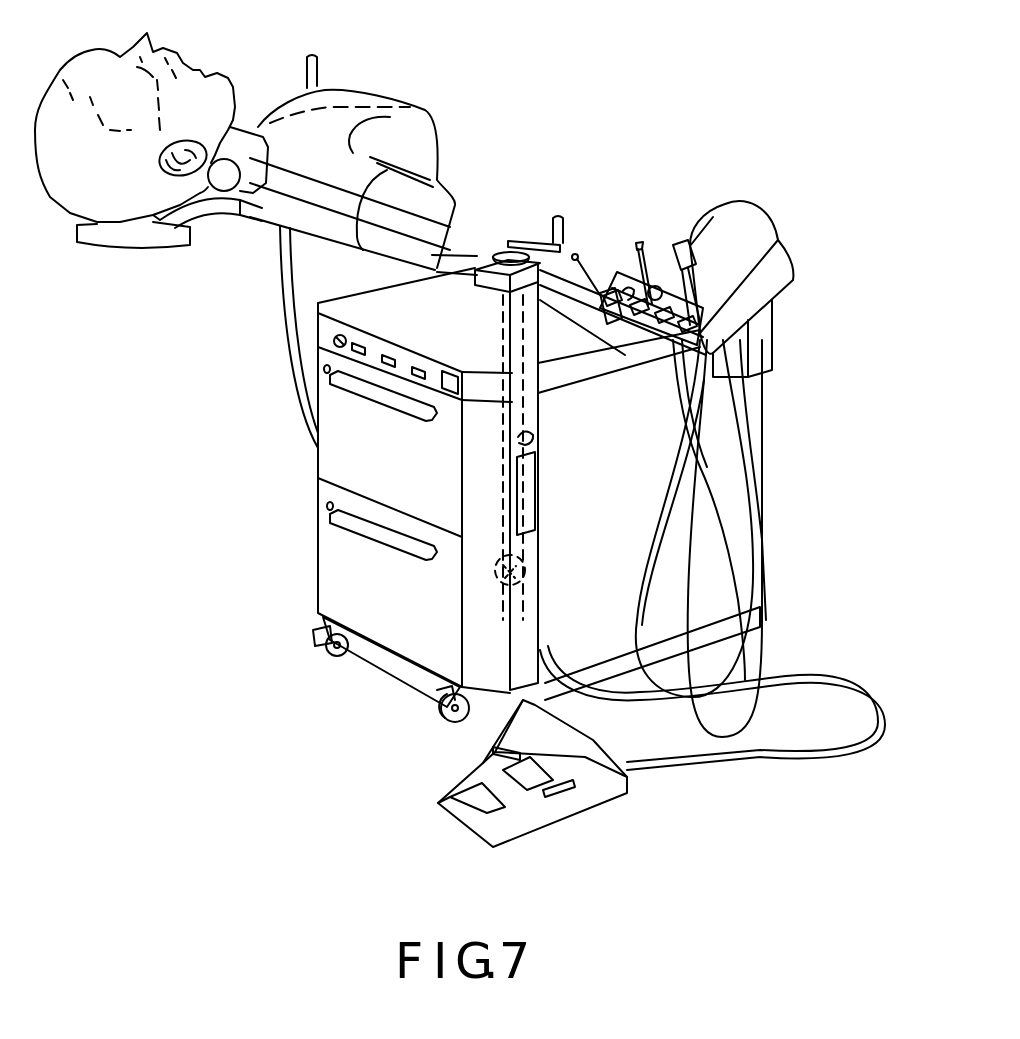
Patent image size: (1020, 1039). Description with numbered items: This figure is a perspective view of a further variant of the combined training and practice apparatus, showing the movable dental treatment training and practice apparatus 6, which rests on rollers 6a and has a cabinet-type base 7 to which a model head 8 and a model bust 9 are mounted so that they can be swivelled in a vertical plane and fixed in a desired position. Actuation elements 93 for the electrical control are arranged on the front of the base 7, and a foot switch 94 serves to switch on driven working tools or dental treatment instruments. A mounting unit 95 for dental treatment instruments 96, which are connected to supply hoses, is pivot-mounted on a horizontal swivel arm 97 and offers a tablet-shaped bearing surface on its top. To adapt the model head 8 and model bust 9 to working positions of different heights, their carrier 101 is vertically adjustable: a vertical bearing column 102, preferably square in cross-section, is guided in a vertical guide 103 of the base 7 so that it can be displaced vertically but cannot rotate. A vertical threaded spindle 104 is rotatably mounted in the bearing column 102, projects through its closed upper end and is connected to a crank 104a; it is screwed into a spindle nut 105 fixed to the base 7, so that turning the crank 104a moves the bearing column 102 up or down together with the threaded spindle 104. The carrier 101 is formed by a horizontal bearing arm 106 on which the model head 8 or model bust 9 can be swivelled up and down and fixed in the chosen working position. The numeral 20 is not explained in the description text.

The dental treatment training and practice apparatus 6 is at (318, 546).
The rollers 6a is at (336, 657).
The cabinet-type base 7 is at (405, 688).
The model head 8 is at (63, 180).
The model bust 9 is at (300, 158).
The manikin torso 20 is at (318, 66).
The actuation elements 93 is at (339, 346).
The foot switch 94 is at (490, 818).
The mounting unit 95 is at (793, 248).
The dental treatment instruments 96 is at (683, 243).
The horizontal swivel arm 97 is at (767, 352).
The carrier 101 is at (482, 250).
The bearing column 102 is at (540, 412).
The vertical guide 103 is at (522, 440).
The threaded spindle 104 is at (517, 330).
The crank 104a is at (590, 200).
The spindle nut 105 is at (535, 565).
The horizontal bearing arm 106 is at (452, 266).